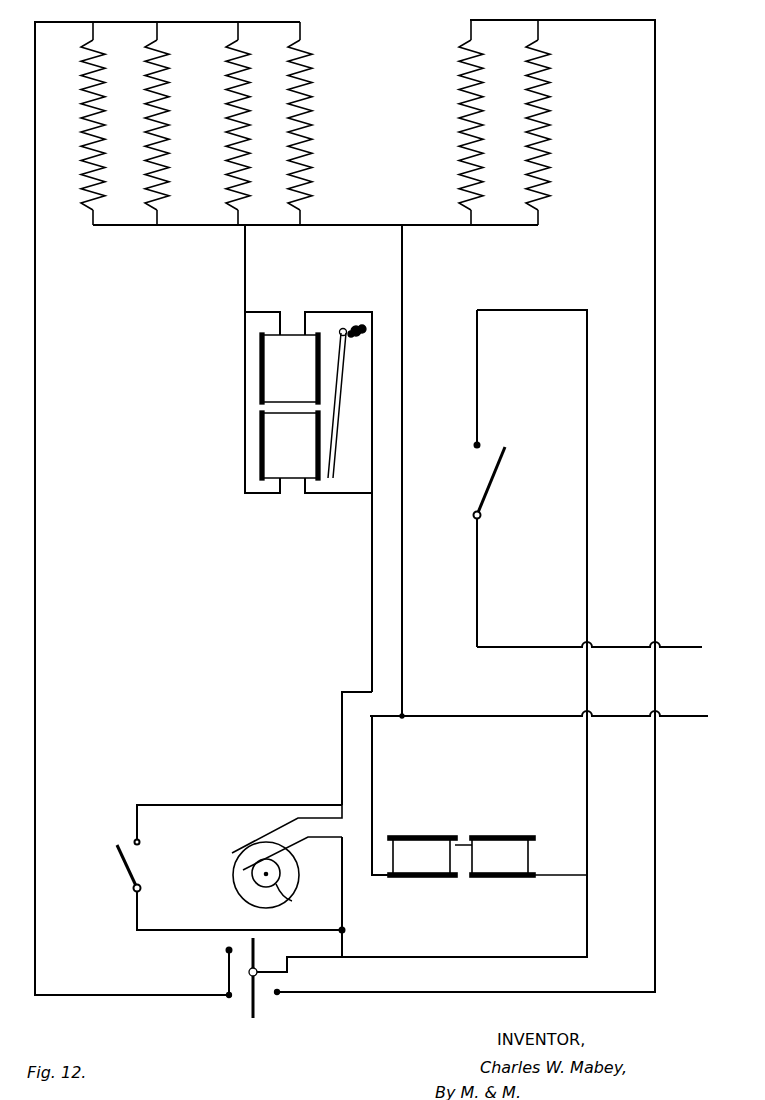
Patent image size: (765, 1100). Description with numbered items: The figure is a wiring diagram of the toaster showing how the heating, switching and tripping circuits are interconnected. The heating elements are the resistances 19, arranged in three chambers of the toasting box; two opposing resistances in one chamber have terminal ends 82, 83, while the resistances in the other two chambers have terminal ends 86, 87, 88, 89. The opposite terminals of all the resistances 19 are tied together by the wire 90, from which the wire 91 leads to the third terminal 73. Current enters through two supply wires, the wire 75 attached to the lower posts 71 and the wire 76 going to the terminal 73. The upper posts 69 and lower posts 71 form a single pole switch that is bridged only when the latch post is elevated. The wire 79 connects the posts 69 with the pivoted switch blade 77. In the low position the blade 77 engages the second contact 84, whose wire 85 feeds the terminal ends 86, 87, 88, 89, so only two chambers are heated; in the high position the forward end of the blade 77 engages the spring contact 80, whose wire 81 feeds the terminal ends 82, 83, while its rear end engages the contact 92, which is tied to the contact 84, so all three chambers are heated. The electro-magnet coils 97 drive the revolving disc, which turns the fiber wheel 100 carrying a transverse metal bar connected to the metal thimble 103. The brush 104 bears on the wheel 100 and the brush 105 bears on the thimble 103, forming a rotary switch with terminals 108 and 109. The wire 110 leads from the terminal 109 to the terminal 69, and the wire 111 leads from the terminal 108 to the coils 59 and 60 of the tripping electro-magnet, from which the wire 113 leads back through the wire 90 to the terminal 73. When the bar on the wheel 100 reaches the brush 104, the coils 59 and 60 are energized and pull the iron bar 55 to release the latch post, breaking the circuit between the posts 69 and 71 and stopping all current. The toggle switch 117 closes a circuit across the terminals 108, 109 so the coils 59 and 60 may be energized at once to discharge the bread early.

The resistances 19 is at (144, 110).
The iron bar 55 is at (337, 400).
The coil 59 is at (280, 367).
The coil 60 is at (275, 443).
The posts 69 is at (480, 444).
The posts 71 is at (483, 514).
The third terminal 73 is at (404, 718).
The wire 75 is at (547, 647).
The wire 76 is at (542, 716).
The blade 77 is at (257, 1008).
The wire 79 is at (587, 462).
The spring contact 80 is at (280, 990).
The wire 81 is at (655, 312).
The terminal end 82 is at (468, 30).
The terminal end 83 is at (540, 27).
The second contact 84 is at (228, 999).
The wire 85 is at (35, 527).
The terminal end 86 is at (90, 35).
The terminal end 87 is at (155, 35).
The terminal end 88 is at (236, 35).
The terminal end 89 is at (297, 35).
The wire 90 is at (371, 225).
The wire 91 is at (402, 412).
The contact 92 is at (226, 951).
The electro-magnet coils 97 is at (470, 872).
The fiber wheel 100 is at (300, 879).
The metal thimble 103 is at (292, 902).
The brush 104 is at (278, 832).
The brush 105 is at (291, 846).
The terminal 108 is at (340, 803).
The terminal 109 is at (342, 839).
The wire 110 is at (342, 904).
The wire 111 is at (342, 740).
The wire 113 is at (245, 288).
The toggle switch 117 is at (135, 862).